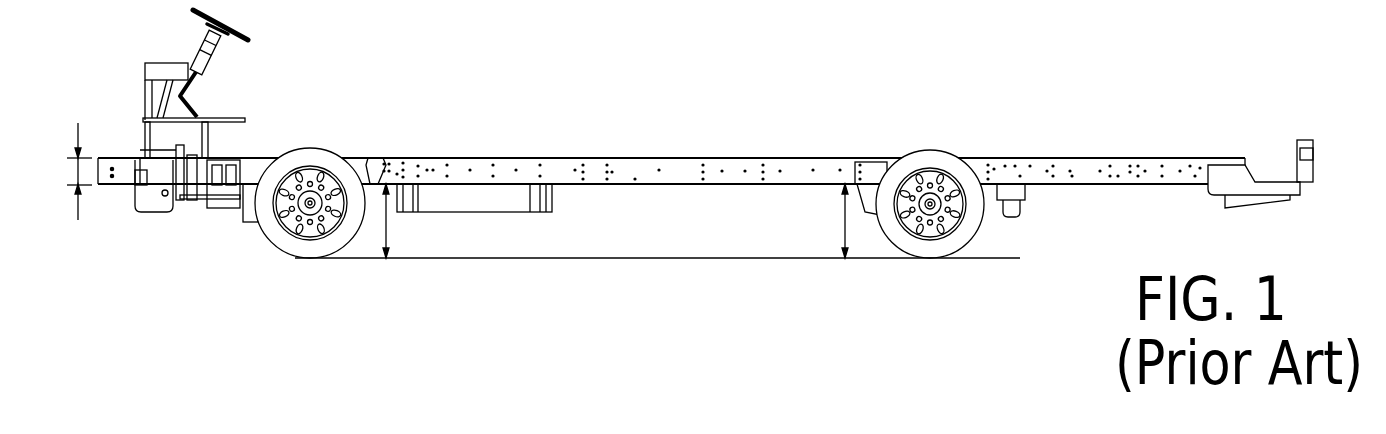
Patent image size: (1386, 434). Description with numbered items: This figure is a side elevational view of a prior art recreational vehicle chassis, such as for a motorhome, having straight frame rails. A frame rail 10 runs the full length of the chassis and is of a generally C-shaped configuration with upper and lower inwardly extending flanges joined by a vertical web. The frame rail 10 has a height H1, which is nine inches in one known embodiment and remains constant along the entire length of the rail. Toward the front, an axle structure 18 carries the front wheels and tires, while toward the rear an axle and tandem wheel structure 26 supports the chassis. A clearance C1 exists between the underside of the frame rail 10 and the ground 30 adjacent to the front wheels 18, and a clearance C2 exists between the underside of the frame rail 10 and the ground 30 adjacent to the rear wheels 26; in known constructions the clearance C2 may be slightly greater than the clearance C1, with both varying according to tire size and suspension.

The frame rail 10 is at (670, 168).
The axle structure 18 is at (340, 272).
The axle and tandem wheel structure 26 is at (914, 278).
The ground 30 is at (615, 258).
The clearance C1 is at (386, 218).
The clearance C2 is at (845, 218).
The height H1 is at (80, 172).